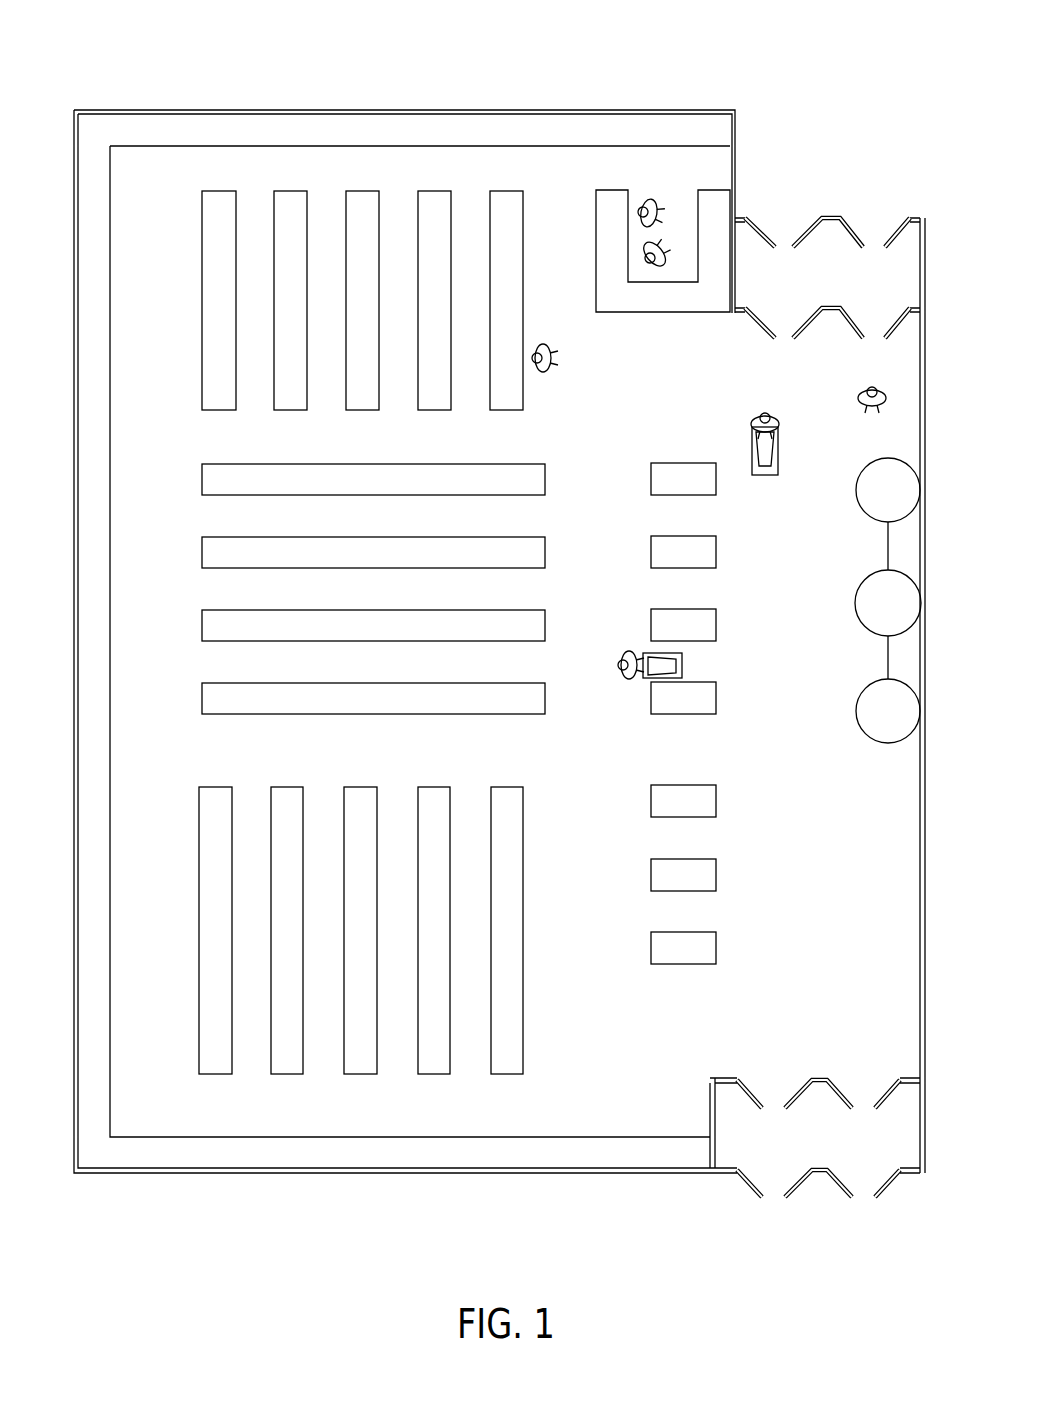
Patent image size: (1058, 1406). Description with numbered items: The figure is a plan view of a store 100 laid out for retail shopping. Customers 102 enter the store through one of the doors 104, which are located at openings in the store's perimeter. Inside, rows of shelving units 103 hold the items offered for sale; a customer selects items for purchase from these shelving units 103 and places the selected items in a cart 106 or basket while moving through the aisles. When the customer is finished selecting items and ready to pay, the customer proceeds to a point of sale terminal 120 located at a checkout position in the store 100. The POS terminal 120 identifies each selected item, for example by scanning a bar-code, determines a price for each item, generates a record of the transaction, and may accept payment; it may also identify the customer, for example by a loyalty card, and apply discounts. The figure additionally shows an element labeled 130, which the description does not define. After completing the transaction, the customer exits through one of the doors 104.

The store 100 is at (778, 43).
The customer 102 is at (873, 386).
The shelving unit 103 is at (511, 800).
The door 104 is at (841, 1184).
The cart 106 is at (683, 665).
The point of sale (POS) terminal 120 is at (703, 958).
The store employee 130 is at (548, 358).